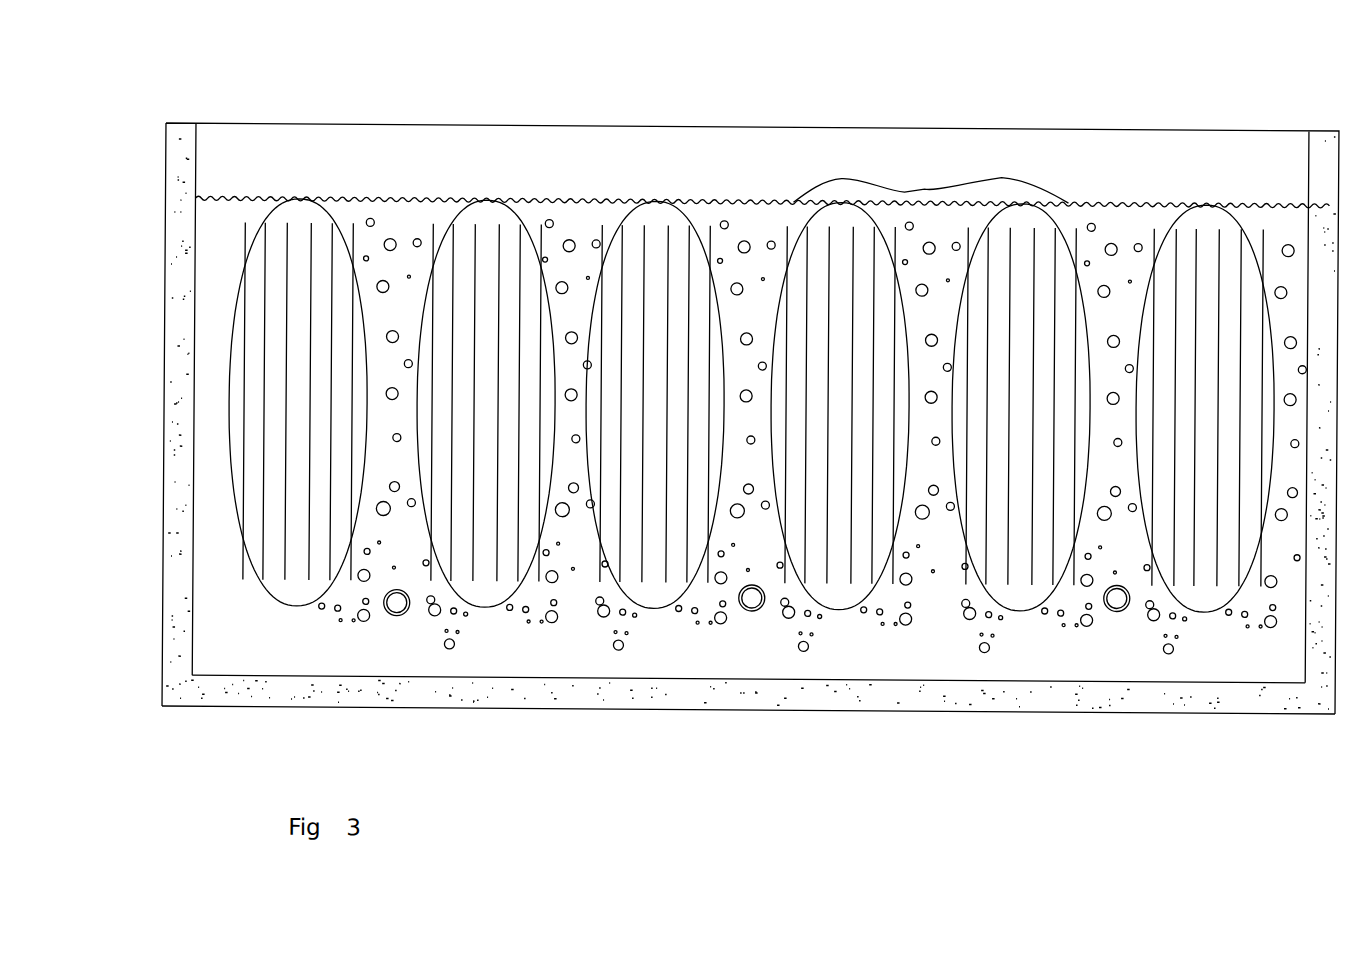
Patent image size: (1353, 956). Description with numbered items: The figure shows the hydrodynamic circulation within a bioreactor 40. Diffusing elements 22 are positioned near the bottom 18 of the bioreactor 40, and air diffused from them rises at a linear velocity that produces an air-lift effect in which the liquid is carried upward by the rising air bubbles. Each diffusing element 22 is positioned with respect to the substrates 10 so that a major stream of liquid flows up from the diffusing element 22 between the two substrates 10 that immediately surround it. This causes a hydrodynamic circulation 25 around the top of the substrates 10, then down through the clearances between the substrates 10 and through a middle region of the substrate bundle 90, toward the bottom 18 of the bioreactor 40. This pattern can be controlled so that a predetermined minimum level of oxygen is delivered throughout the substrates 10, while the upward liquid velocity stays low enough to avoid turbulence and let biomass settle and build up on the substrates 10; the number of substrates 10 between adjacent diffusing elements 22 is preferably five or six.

The substrate 10 is at (1027, 268).
The bottom 18 is at (433, 709).
The diffusing element 22 is at (407, 607).
The hydrodynamic circulation 25 is at (688, 226).
The bioreactor 40 is at (138, 346).
The substrate bundle 90 is at (923, 188).